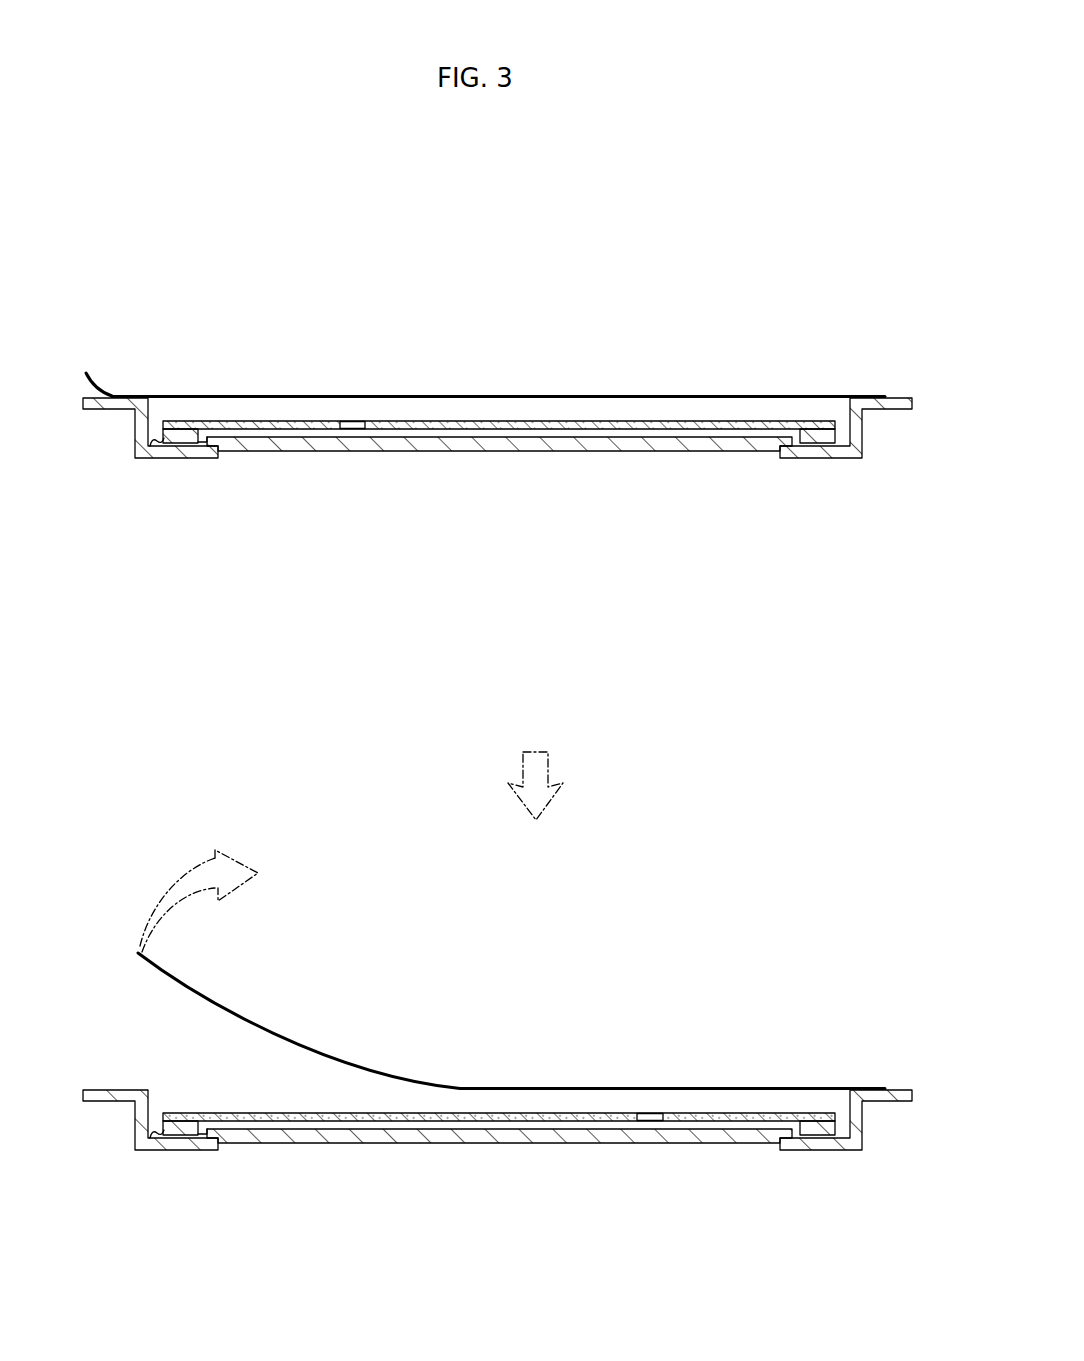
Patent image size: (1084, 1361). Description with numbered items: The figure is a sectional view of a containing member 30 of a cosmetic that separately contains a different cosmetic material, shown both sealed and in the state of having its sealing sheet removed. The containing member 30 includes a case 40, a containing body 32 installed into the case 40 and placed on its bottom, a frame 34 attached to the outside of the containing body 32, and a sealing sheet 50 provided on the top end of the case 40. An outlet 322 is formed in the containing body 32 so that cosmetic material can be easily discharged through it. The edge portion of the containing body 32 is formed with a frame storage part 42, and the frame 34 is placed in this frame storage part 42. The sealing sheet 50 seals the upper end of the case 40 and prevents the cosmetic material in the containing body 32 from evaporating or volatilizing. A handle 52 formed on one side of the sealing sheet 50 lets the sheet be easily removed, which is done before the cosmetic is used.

The containing member 30 is at (648, 385).
The containing body 32 is at (430, 421).
The outlet 322 is at (495, 421).
The frame 34 is at (814, 428).
The case 40 is at (293, 444).
The frame storage part 42 is at (150, 446).
The sealing sheet 50 is at (262, 395).
The handle 52 is at (102, 382).